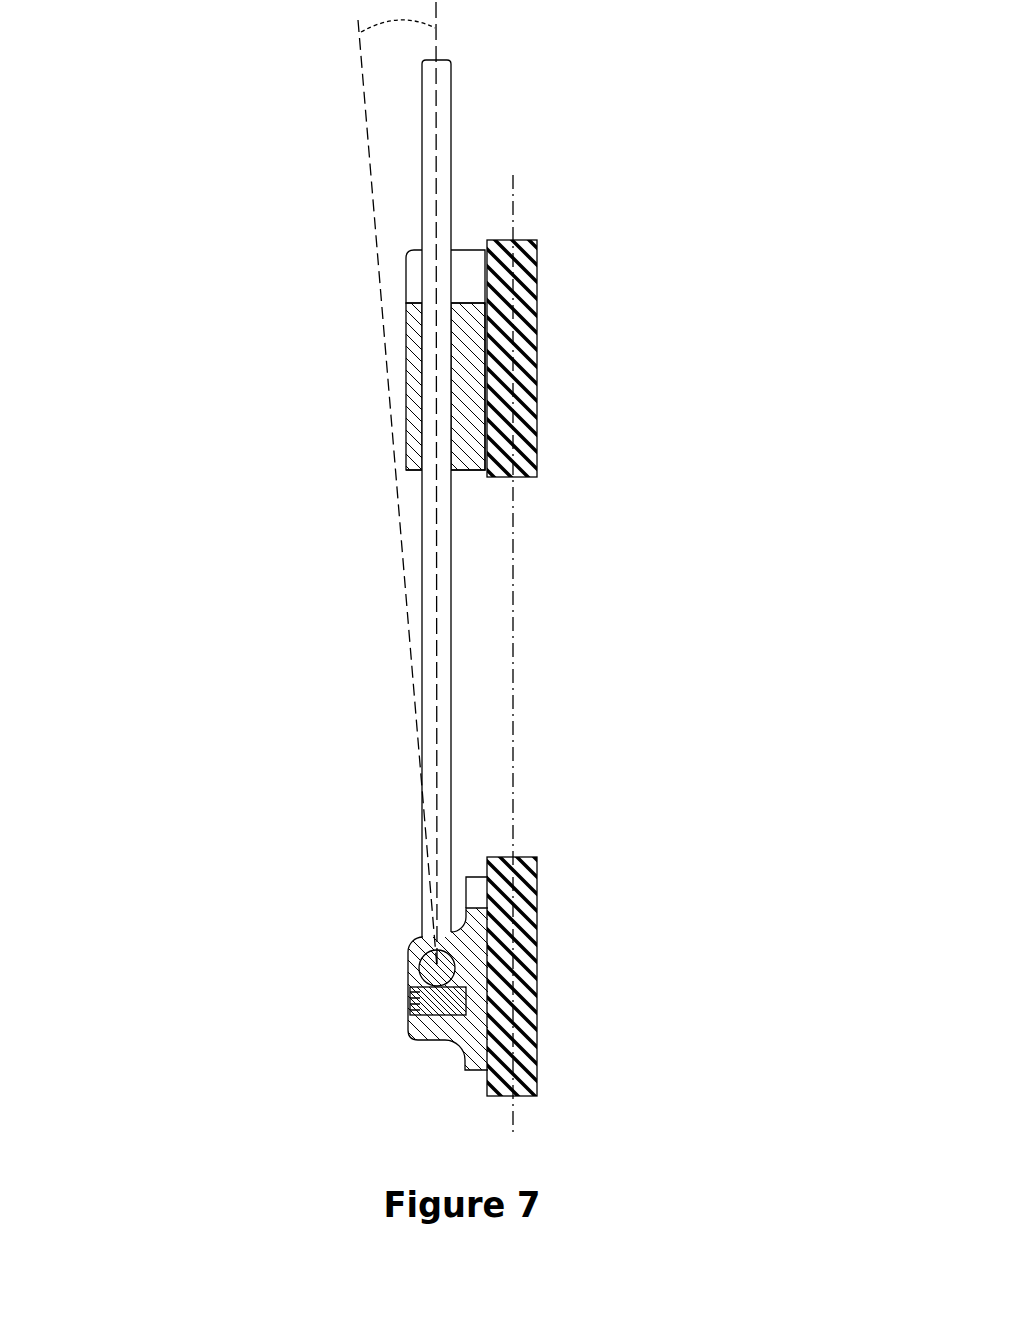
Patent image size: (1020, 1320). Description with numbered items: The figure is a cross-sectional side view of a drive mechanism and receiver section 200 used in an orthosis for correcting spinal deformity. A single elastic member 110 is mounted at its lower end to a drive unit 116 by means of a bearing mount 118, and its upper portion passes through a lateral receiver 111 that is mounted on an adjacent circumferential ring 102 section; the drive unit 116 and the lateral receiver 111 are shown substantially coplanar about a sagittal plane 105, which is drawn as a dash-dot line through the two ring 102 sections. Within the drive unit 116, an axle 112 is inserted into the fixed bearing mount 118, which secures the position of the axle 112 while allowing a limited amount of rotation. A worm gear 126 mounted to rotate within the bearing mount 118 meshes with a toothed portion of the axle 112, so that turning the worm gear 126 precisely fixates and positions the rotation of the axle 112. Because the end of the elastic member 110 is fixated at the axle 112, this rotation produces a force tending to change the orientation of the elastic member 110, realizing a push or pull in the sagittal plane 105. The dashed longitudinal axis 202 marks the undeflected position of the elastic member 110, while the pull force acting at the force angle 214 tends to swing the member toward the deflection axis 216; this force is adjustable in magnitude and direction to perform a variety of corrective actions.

The lateral driver and receiver section 200 is at (483, 157).
The force angle 214 is at (405, 18).
The longitudinal axis 202 is at (433, 135).
The lateral receiver 111 is at (414, 281).
The circumferential ring 102 is at (512, 985).
The elastic member 110 is at (446, 656).
The sagittal plane 105 is at (513, 695).
The deflection axis 216 is at (397, 490).
The bearing mount 118 is at (419, 946).
The axle 112 is at (376, 933).
The drive unit 116 is at (296, 930).
The worm gear 126 is at (410, 996).